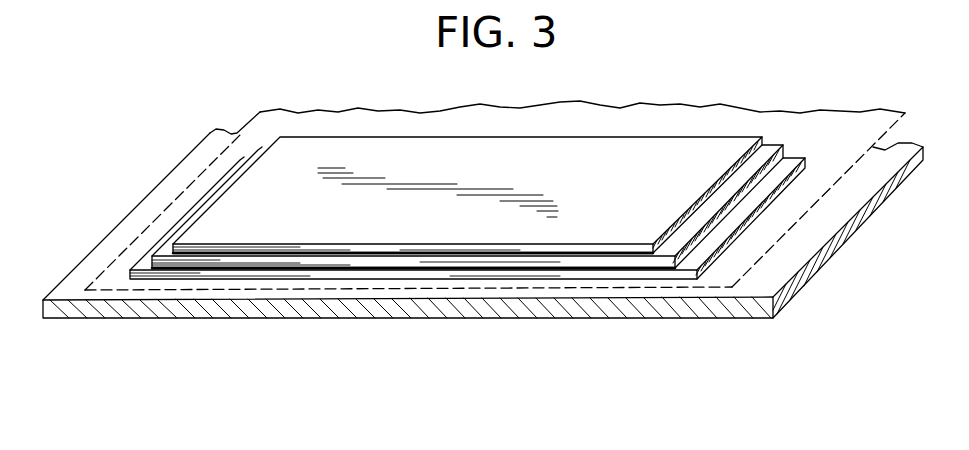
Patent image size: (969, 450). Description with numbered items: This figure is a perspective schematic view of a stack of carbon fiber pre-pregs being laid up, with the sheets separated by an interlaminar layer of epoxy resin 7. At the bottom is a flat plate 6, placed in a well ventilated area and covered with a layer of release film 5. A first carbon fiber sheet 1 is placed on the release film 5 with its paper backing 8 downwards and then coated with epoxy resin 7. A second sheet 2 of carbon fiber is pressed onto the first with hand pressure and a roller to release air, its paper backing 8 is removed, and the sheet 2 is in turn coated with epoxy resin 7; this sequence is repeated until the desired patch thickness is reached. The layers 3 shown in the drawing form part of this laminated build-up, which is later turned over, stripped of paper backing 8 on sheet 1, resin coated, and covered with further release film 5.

The carbon fiber sheet 1 is at (288, 275).
The second sheet of carbon fiber 2 is at (333, 263).
The upper plate 3 is at (377, 248).
The release film 5 is at (212, 162).
The flat plate 6 is at (95, 260).
The epoxy resin 7 is at (537, 270).
The paper backing 8 is at (683, 148).